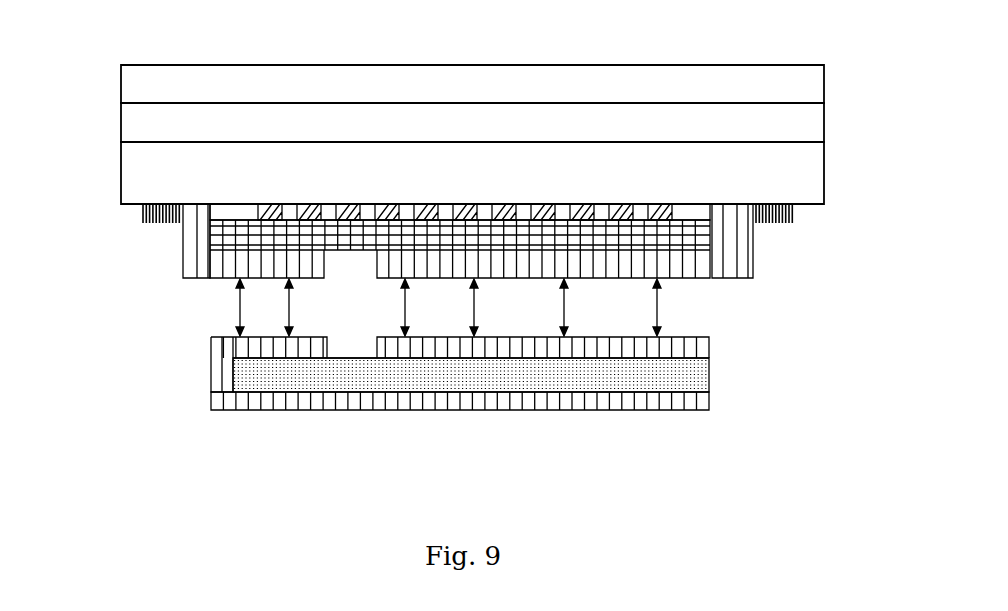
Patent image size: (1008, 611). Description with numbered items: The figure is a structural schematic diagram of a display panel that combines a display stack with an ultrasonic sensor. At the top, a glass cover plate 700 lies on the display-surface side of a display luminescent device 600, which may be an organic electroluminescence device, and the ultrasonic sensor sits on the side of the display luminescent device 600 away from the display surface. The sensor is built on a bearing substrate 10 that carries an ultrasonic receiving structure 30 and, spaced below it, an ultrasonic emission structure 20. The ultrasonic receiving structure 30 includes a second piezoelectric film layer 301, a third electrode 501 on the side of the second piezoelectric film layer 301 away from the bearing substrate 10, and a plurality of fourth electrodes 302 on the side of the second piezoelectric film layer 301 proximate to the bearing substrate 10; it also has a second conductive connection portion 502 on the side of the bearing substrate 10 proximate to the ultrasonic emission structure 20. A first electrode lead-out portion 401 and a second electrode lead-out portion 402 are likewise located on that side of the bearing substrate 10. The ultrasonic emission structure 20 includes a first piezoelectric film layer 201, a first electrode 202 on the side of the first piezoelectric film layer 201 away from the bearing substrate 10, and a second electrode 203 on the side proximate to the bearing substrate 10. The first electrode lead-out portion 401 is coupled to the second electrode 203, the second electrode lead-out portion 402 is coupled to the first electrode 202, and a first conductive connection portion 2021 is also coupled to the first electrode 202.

The glass cover plate 700 is at (122, 86).
The display luminescent device 600 is at (122, 120).
The bearing substrate 10 is at (118, 175).
The first electrode lead-out portion 401 is at (777, 203).
The second electrode lead-out portion 402 is at (162, 226).
The ultrasonic receiving structure 30 is at (545, 270).
The third electrode 501 is at (722, 268).
The second conductive connection portion 502 is at (227, 268).
The fourth electrodes 302 is at (358, 212).
The second piezoelectric film layer 301 is at (688, 226).
The ultrasonic emission structure 20 is at (443, 422).
The second electrode 203 is at (697, 347).
The first conductive connection portion 2021 is at (228, 358).
The first piezoelectric film layer 201 is at (593, 378).
The first electrode 202 is at (662, 402).